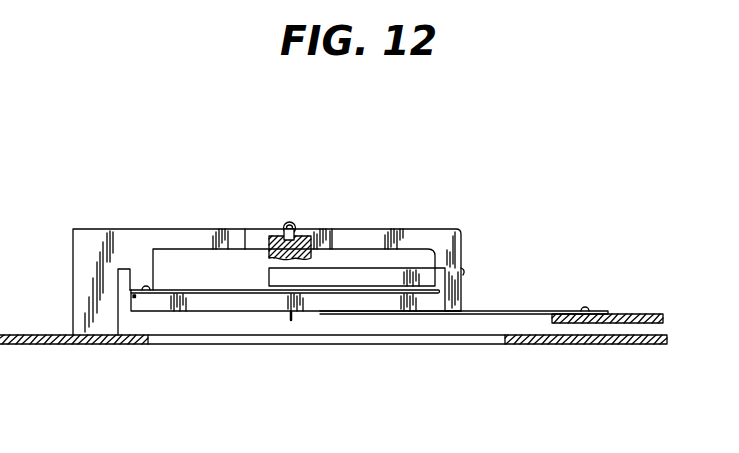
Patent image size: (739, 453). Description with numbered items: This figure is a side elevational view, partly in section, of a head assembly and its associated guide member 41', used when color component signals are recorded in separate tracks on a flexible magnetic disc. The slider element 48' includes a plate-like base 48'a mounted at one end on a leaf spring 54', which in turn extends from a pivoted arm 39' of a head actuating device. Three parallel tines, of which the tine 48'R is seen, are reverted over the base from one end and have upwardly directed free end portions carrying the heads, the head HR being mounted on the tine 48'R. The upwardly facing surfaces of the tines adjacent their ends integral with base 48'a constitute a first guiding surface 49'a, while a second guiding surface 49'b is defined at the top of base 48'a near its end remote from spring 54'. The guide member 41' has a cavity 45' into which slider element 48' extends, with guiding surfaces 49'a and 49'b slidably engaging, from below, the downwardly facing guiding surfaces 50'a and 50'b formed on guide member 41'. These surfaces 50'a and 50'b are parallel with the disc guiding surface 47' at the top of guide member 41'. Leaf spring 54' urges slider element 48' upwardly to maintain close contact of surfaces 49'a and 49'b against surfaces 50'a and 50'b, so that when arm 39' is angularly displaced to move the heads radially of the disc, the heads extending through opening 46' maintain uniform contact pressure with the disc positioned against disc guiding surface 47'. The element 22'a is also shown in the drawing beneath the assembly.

The guide member 41' is at (294, 249).
The disc guiding surface 47' is at (388, 206).
The opening 46' is at (236, 210).
The guiding surface 50'b is at (117, 257).
The guiding surface 50'a is at (499, 238).
The head HR is at (287, 221).
The tine 48'R is at (405, 344).
The first guiding surface 49'a is at (289, 327).
The second guiding surface 49'b is at (296, 339).
The plate-like base 48'a is at (322, 351).
The slider element 48' is at (290, 352).
The cavity 45' is at (190, 362).
The leaf spring 54' is at (464, 288).
The pivoted arm 39' is at (607, 294).
The base plate 22'a is at (333, 360).